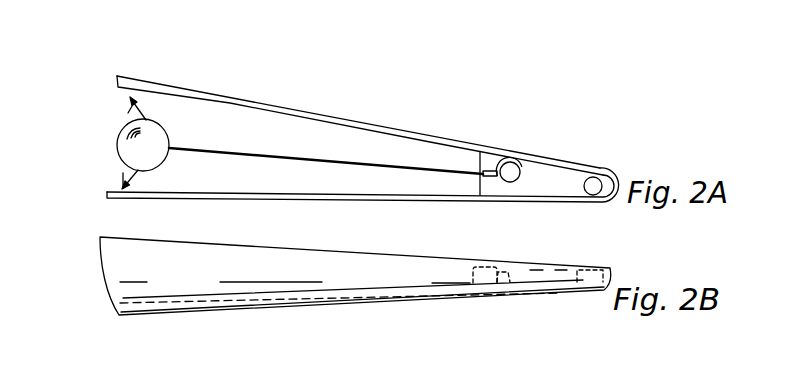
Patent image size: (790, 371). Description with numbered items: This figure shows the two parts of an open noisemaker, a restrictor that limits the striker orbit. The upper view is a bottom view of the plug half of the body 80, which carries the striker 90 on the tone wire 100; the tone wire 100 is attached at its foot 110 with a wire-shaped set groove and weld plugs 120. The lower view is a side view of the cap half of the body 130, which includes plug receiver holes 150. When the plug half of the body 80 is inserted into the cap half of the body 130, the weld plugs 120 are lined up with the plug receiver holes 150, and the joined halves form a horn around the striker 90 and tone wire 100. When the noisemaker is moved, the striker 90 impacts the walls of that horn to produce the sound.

In FIG. 2A, the plug half of the body 80 is at (375, 117).
In FIG. 2A, the striker 90 is at (152, 130).
In FIG. 2A, the tone wire 100 is at (248, 155).
In FIG. 2A, the foot 110 is at (495, 165).
In FIG. 2A, the weld plugs 120 is at (518, 160).
In FIG. 2B, the cap half of the body 130 is at (128, 270).
In FIG. 2B, the plug receiver holes 150 is at (505, 275).